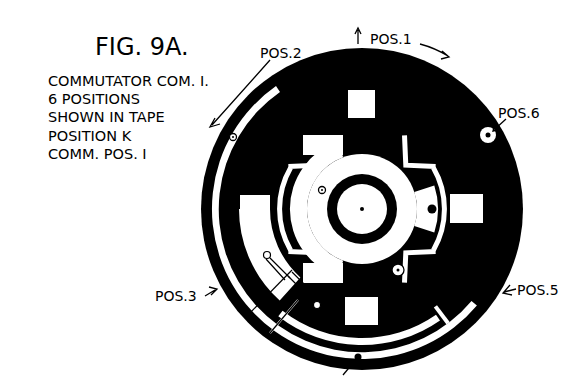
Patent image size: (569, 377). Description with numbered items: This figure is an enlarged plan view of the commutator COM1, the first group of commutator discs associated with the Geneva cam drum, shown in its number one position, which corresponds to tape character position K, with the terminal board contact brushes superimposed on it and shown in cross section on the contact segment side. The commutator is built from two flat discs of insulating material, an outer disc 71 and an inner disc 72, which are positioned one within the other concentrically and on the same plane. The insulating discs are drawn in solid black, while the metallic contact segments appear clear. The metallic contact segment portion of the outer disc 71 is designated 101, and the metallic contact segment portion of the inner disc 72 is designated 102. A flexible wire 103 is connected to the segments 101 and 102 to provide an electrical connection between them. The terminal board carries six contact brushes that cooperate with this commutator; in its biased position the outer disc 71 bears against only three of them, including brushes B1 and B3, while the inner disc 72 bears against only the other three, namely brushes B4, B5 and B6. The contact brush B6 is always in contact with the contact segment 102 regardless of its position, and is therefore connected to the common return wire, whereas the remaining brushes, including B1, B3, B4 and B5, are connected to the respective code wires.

The contact brush B1 is at (504, 137).
The contact brush B3 is at (230, 140).
The contact brush B4 is at (393, 265).
The contact brush B5 is at (428, 209).
The contact brush B6 is at (331, 183).
The outer disc 71 is at (482, 318).
The inner disc 72 is at (462, 338).
The metallic contact segment portion 101 is at (235, 240).
The metallic contact segment portion 102 is at (272, 334).
The flexible wire 103 is at (246, 320).